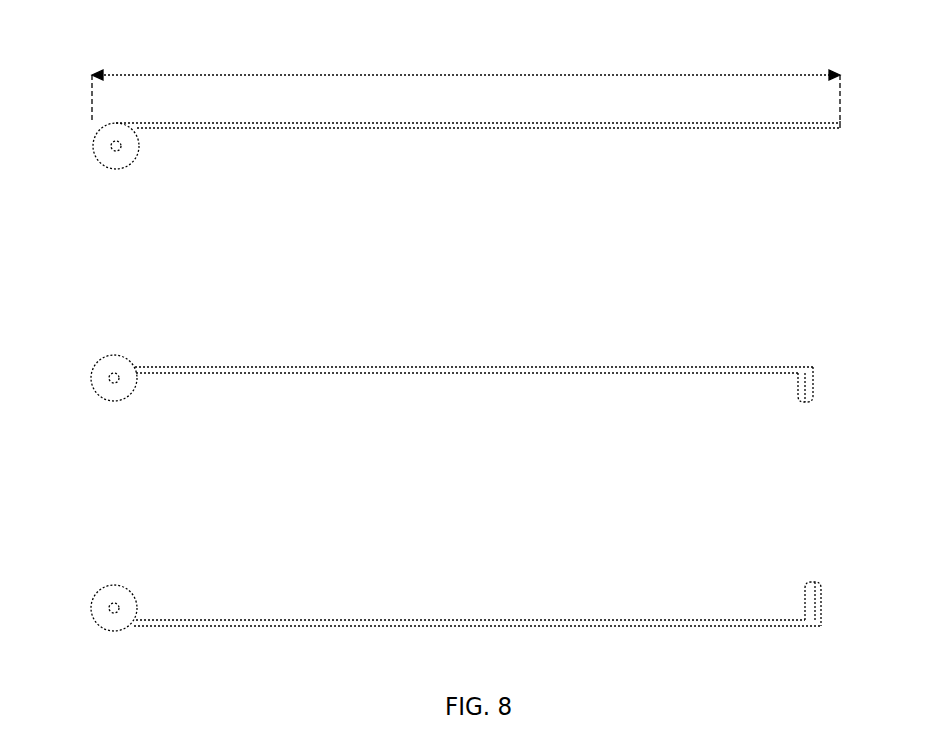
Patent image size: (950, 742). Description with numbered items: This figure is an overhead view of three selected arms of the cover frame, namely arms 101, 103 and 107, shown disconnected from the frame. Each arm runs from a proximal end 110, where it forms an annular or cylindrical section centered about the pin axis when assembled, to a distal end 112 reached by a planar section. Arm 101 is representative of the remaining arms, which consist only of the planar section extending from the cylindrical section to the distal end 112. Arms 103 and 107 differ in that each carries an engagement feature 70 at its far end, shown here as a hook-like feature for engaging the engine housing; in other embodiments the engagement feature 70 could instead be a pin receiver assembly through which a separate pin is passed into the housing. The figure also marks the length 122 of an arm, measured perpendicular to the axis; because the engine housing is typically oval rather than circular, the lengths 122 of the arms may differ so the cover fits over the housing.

The engagement feature 70 is at (795, 396).
The arm 101 is at (300, 130).
The arm 103 is at (300, 375).
The arm 107 is at (299, 627).
The proximal end 110 is at (94, 147).
The distal end 112 is at (843, 126).
The length 122 is at (445, 73).